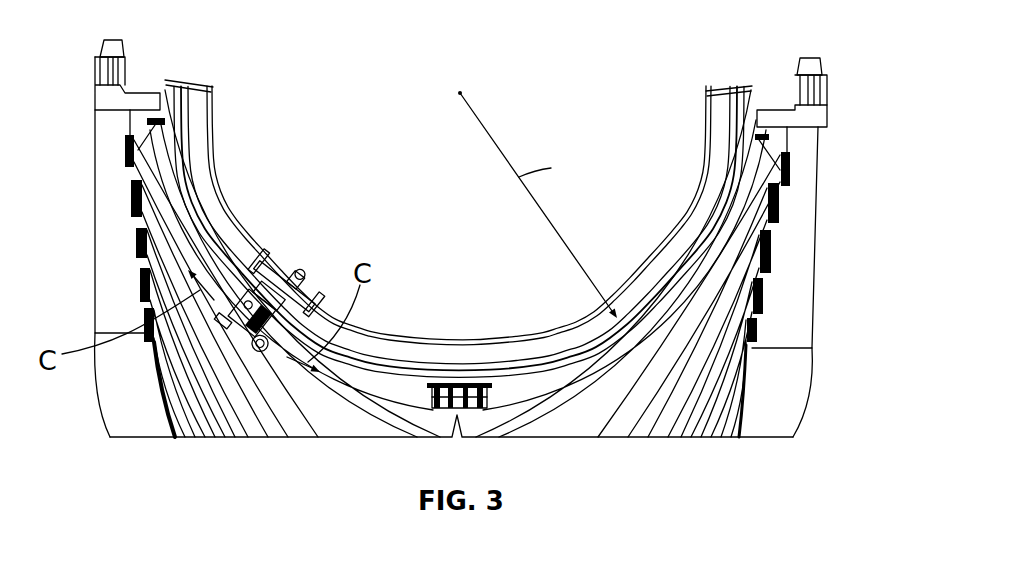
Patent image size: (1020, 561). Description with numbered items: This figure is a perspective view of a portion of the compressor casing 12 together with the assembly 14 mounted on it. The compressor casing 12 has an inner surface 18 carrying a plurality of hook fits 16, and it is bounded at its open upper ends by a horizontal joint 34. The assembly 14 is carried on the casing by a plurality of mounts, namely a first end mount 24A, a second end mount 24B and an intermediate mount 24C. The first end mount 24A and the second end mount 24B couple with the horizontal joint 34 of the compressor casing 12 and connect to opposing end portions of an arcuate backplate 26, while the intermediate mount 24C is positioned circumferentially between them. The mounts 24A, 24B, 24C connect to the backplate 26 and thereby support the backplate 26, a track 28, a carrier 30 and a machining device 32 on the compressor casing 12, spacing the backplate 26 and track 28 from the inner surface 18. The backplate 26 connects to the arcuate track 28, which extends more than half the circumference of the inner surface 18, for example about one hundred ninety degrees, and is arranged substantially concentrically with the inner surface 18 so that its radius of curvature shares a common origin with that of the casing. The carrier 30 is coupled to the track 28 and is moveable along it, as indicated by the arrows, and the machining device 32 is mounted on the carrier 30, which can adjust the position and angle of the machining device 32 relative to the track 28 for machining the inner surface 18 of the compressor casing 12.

The compressor casing 12 is at (219, 443).
The assembly 14 is at (458, 211).
The hook fits 16 is at (781, 261).
The inner surface 18 is at (712, 381).
The first end mount 24A is at (155, 84).
The second end mount 24B is at (776, 80).
The intermediate mount 24C is at (459, 376).
The backplate 26 is at (222, 208).
The track 28 is at (735, 187).
The carrier 30 is at (211, 316).
The machining device 32 is at (225, 318).
The horizontal joint 34 is at (110, 246).